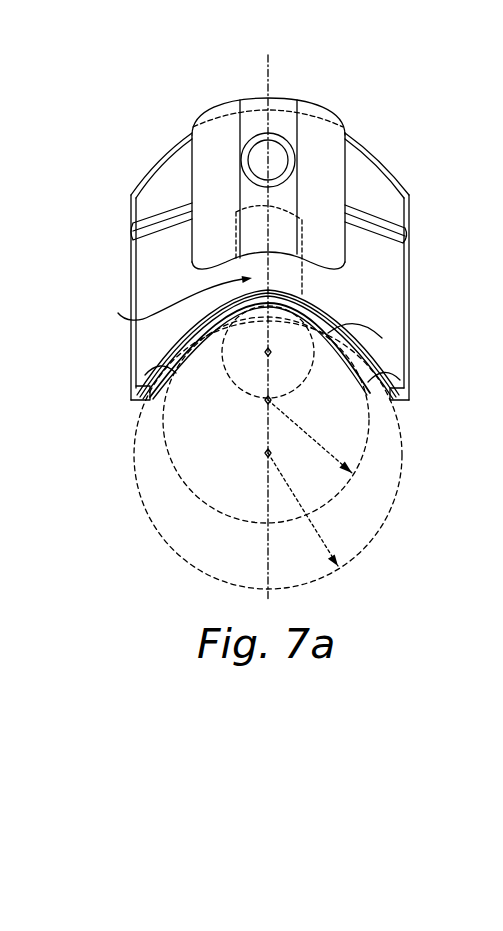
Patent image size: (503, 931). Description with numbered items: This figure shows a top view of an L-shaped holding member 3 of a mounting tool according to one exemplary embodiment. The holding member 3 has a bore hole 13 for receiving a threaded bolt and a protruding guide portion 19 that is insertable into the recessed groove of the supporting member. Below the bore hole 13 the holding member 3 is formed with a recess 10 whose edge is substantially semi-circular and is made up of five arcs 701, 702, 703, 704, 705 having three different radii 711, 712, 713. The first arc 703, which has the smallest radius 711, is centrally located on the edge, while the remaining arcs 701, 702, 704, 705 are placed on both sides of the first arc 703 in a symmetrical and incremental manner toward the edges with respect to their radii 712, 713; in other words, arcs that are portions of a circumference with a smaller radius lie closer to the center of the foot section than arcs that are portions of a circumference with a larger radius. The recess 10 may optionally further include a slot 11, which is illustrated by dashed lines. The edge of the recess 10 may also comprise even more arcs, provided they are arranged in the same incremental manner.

The holding member 3 is at (136, 144).
The recess 10 is at (199, 441).
The slot 11 is at (172, 298).
The bore hole 13 is at (266, 150).
The protruding guide portion 19 is at (284, 131).
The arc 701 is at (135, 388).
The arc 702 is at (222, 315).
The first arc 703 is at (305, 296).
The arc 704 is at (378, 326).
The arc 705 is at (382, 373).
The radius 711 is at (283, 326).
The radius 712 is at (303, 433).
The radius 713 is at (316, 525).